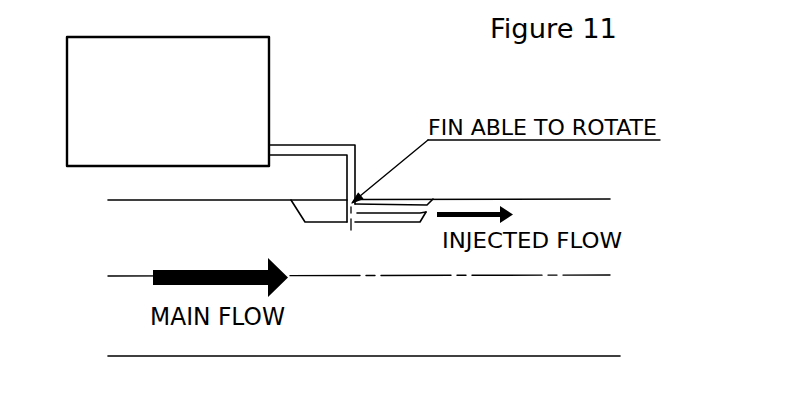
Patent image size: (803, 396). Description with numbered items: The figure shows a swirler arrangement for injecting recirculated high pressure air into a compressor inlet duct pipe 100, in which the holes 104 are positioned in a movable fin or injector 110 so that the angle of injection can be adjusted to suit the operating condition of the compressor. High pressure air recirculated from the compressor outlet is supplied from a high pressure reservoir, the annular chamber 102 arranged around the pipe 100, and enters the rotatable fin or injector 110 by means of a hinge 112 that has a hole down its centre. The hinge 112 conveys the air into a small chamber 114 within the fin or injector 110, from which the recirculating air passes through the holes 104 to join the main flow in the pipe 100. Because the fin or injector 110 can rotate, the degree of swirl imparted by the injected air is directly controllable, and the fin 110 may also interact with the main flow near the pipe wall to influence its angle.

The compressor inlet duct pipe 100 is at (603, 356).
The annular chamber 102 is at (270, 52).
The holes or nozzles 104 is at (428, 206).
The movable fin or injector 110 is at (315, 219).
The hinge 112 is at (347, 192).
The small chamber 114 is at (377, 214).